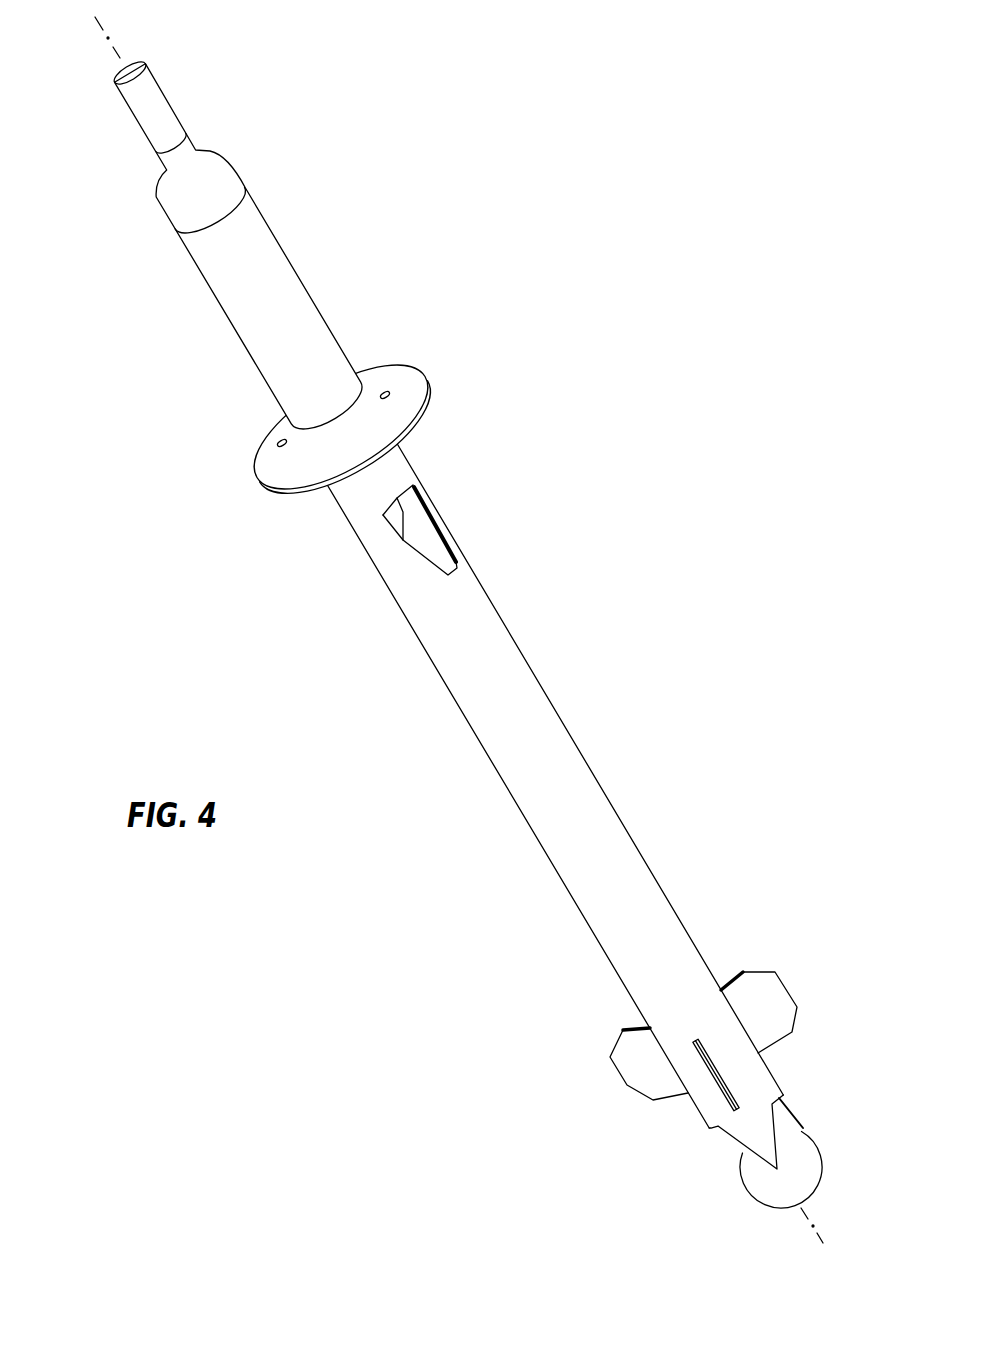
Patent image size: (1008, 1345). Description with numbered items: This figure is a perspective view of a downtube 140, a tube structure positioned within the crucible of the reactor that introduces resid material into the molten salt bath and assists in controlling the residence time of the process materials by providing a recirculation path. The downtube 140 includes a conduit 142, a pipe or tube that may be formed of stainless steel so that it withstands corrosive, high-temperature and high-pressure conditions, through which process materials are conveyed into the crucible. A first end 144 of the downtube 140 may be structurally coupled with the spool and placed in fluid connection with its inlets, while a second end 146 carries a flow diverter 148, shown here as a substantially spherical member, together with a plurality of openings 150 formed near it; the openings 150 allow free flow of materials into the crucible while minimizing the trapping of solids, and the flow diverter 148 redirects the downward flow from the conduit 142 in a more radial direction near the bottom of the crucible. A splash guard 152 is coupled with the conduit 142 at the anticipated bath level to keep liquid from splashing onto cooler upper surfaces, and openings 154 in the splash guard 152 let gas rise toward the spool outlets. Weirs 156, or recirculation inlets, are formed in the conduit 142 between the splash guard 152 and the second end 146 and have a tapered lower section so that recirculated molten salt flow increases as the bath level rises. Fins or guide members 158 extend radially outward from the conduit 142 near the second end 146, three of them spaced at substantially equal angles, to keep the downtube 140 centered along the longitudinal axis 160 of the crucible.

The downtube 140 is at (469, 632).
The conduit 142 is at (469, 632).
The first end 144 is at (157, 60).
The second end 146 is at (744, 1142).
The flow diverter 148 is at (760, 1202).
The openings 150 is at (790, 1122).
The splash guard 152 is at (348, 392).
The openings 154 is at (386, 392).
The weirs 156 is at (430, 534).
The guide members 158 is at (763, 972).
The longitudinal axis 160 is at (102, 28).